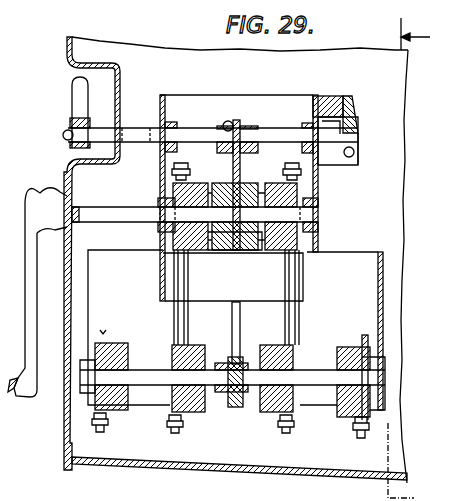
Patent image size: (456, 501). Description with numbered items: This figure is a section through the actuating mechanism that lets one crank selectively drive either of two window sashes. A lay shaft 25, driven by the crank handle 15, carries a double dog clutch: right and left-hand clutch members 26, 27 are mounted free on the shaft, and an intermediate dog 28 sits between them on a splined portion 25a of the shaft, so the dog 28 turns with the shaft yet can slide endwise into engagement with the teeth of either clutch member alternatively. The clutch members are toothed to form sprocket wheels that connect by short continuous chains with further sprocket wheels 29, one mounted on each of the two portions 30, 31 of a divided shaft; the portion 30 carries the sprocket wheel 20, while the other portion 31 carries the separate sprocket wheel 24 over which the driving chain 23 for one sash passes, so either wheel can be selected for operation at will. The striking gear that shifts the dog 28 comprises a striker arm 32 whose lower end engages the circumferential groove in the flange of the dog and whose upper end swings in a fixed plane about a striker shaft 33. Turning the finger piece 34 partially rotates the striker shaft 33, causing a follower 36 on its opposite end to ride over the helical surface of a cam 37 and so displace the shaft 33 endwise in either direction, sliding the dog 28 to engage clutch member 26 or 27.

The crank handle 15 is at (33, 308).
The sprocket wheel 20 is at (106, 330).
The driving chain 23 is at (371, 435).
The sprocket wheel 24 is at (368, 338).
The lay shaft 25 is at (140, 211).
The splined portion 25a is at (215, 218).
The right-hand clutch member 26 is at (316, 229).
The left-hand clutch member 27 is at (158, 228).
The intermediate dog 28 is at (241, 189).
The sprocket wheels 29 is at (258, 412).
The shaft portion 30 is at (150, 375).
The shaft portion 31 is at (320, 375).
The striker arm 32 is at (233, 162).
The striker shaft 33 is at (204, 136).
The finger piece 34 is at (78, 93).
The follower 36 is at (352, 106).
The cam 37 is at (330, 107).